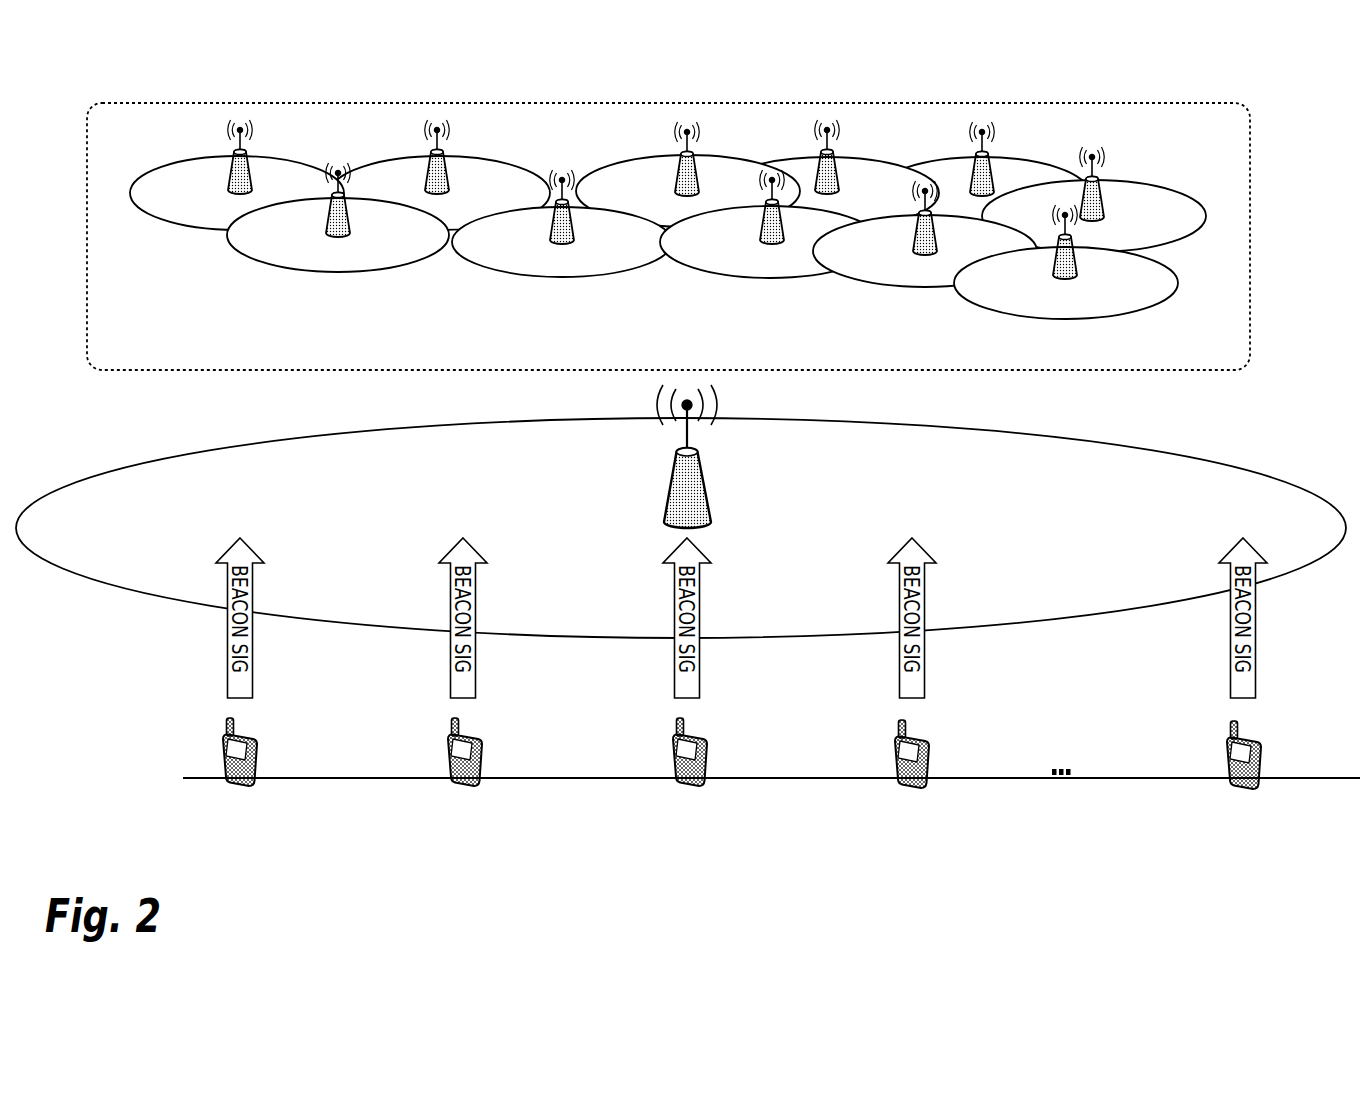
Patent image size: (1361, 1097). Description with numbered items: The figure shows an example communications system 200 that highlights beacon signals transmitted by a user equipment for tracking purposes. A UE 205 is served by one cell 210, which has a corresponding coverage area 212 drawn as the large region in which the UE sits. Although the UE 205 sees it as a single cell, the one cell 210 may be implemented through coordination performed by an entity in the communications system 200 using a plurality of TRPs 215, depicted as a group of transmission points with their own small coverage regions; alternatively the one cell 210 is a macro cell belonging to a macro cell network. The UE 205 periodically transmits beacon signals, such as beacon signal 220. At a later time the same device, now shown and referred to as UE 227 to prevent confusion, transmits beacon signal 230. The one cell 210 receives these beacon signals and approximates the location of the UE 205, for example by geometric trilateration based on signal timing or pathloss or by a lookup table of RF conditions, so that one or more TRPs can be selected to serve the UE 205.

The communications system 200 is at (1266, 93).
The TRPs 215 is at (336, 103).
The coverage area 212 is at (96, 536).
The one cell 210 is at (667, 490).
The beacon signal 220 is at (228, 580).
The beacon signal 230 is at (899, 580).
The UE 205 is at (223, 742).
The UE 227 is at (893, 742).